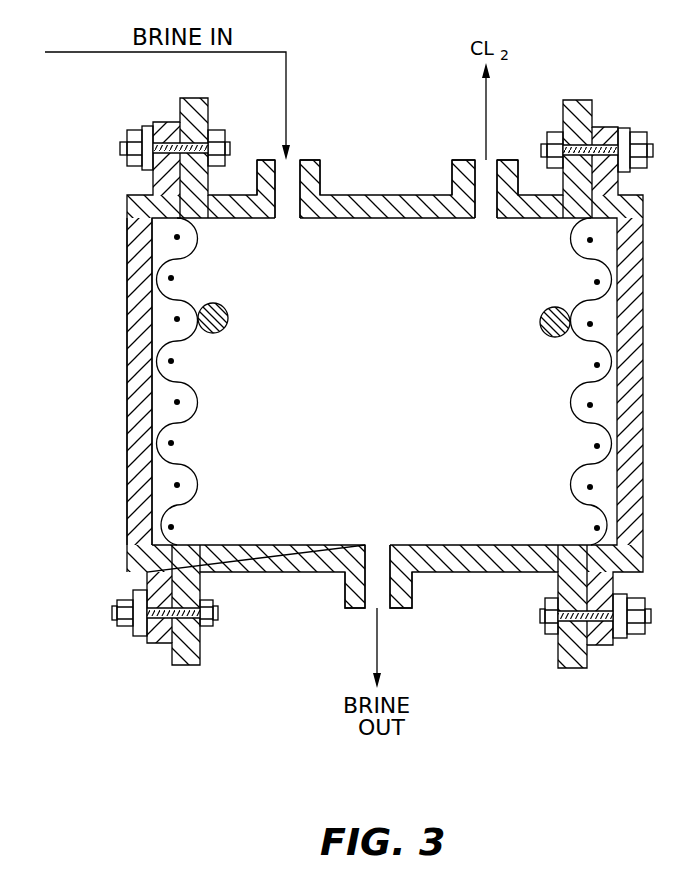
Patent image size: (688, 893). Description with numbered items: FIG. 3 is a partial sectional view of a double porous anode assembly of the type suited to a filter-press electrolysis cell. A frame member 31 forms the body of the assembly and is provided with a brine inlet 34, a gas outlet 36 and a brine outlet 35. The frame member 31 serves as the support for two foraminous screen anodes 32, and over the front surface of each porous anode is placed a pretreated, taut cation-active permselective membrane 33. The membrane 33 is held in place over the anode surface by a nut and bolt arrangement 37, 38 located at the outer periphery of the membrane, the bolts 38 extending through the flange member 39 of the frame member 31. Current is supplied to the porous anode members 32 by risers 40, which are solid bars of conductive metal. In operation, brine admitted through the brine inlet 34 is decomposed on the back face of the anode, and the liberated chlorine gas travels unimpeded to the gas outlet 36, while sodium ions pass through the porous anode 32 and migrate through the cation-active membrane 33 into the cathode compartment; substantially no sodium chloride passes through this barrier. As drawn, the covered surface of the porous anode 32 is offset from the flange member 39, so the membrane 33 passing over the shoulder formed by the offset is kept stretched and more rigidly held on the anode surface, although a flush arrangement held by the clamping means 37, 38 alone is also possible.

The frame member 31 is at (290, 572).
The foraminous screen anode 32 is at (197, 405).
The cation-active permselective membrane 33 is at (127, 415).
The brine inlet 34 is at (320, 160).
The brine outlet 35 is at (412, 608).
The gas outlet 36 is at (452, 160).
The nut 37 is at (120, 630).
The bolt 38 is at (112, 612).
The flange member 39 is at (172, 665).
The riser 40 is at (228, 308).